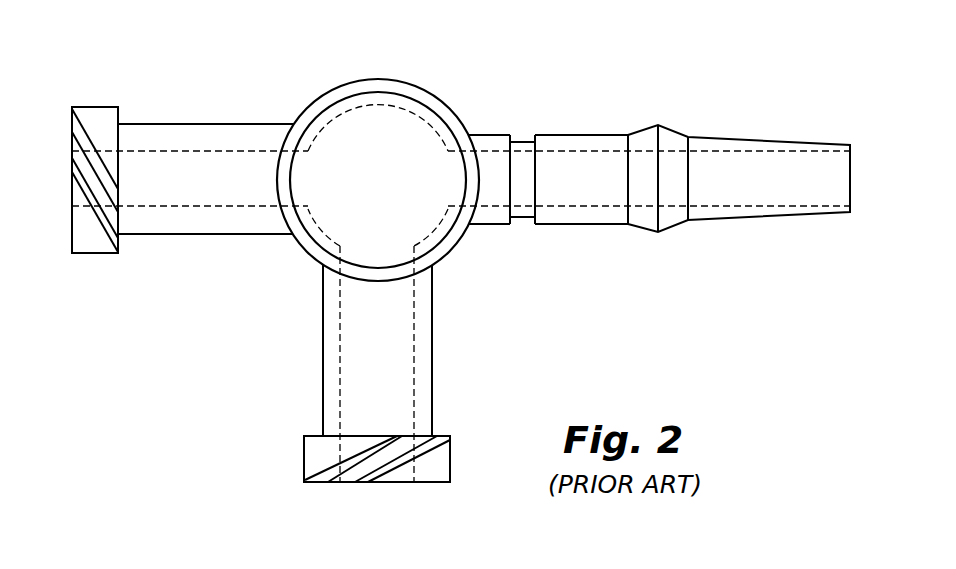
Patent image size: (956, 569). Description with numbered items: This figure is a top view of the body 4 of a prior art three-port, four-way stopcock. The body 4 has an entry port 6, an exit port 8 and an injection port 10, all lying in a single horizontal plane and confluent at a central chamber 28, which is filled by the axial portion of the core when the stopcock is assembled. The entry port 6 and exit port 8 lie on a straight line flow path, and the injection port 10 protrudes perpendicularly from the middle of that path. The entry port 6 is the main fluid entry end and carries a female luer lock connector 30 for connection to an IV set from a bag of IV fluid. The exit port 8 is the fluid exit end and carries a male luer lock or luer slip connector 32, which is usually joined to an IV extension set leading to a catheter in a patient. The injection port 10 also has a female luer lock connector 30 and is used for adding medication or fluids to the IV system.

The body 4 is at (378, 78).
The central chamber 28 is at (405, 138).
The entry port 6 is at (72, 187).
The exit port 8 is at (850, 178).
The injection port 10 is at (398, 484).
The female luer lock connector 30 is at (83, 255).
The male luer lock connector 32 is at (760, 217).